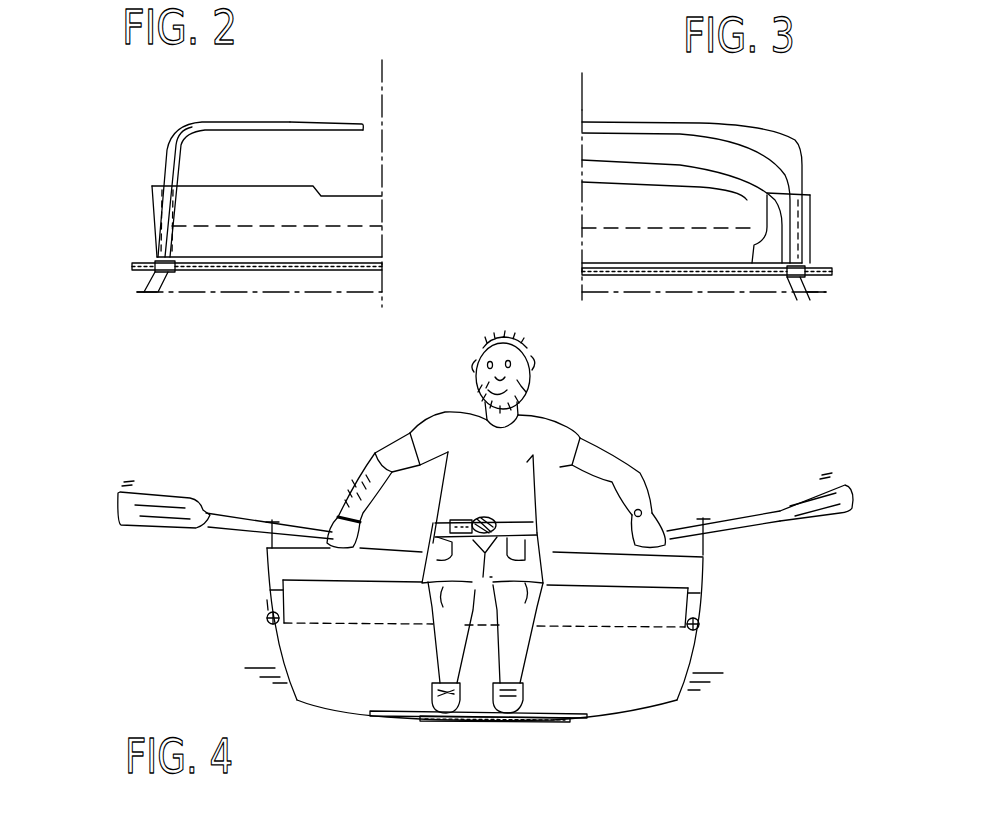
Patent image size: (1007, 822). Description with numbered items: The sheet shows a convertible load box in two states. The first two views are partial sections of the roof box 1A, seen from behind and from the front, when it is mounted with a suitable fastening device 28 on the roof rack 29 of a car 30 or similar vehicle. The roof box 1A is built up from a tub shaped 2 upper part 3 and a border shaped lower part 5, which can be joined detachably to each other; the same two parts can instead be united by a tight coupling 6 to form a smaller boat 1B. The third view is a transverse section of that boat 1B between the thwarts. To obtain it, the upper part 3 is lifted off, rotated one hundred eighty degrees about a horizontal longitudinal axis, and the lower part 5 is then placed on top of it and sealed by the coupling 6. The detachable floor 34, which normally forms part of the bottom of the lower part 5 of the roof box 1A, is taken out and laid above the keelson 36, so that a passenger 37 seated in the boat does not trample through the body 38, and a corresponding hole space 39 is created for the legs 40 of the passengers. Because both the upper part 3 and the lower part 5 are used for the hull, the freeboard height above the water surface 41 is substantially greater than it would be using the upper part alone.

In FIG. 2, the roof box 1A is at (120, 296).
In FIG. 3, the roof box 1A is at (808, 310).
In FIG. 4, the boat 1B is at (203, 650).
In FIG. 4, the tub shaped 2 is at (673, 711).
In FIG. 2, the upper part 3 is at (178, 158).
In FIG. 3, the upper part 3 is at (794, 158).
In FIG. 2, the lower part 5 is at (160, 237).
In FIG. 3, the lower part 5 is at (794, 238).
In FIG. 4, the tight coupling 6 is at (267, 617).
In FIG. 2, the fastening device 28 is at (250, 272).
In FIG. 3, the fastening device 28 is at (715, 275).
In FIG. 2, the roof rack 29 is at (308, 270).
In FIG. 3, the roof rack 29 is at (645, 275).
In FIG. 2, the car 30 is at (355, 371).
In FIG. 3, the car 30 is at (630, 371).
In FIG. 4, the detachable floor 34 is at (425, 721).
In FIG. 4, the keelson 36 is at (505, 721).
In FIG. 4, the passenger 37 is at (588, 452).
In FIG. 4, the body 38 is at (623, 719).
In FIG. 4, the hole space 39 is at (432, 620).
In FIG. 4, the legs 40 is at (513, 657).
In FIG. 4, the water surface 41 is at (722, 675).